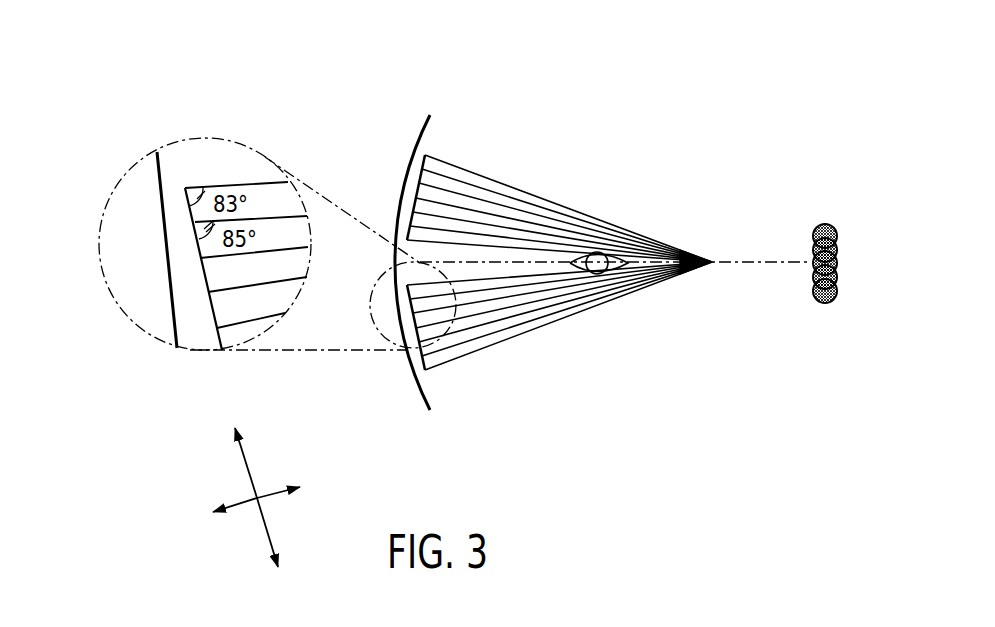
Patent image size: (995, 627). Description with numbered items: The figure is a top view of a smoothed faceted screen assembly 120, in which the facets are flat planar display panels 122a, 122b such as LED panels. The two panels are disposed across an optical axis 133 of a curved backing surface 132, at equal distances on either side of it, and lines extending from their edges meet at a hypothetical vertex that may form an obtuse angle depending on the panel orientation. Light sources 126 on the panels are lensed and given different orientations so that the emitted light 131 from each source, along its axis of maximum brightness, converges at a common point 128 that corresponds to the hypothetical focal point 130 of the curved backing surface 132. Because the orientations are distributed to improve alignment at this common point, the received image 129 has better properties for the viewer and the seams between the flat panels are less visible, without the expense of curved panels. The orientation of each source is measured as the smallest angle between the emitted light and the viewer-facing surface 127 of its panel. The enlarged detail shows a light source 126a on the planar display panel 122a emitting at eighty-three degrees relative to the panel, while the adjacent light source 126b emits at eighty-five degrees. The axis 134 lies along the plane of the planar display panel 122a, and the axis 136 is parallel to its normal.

The smoothed faceted screen assembly 120 is at (305, 70).
The planar display panel 122a is at (430, 368).
The planar display panel 122b is at (430, 161).
The light sources 126 is at (423, 183).
The light source 126a is at (183, 192).
The light source 126b is at (195, 232).
The surface 127 is at (218, 313).
The common point 128 is at (714, 264).
The received image 129 is at (825, 222).
The hypothetical focal point 130 is at (641, 262).
The emitted light 131 is at (568, 208).
The curved backing surface 132 is at (401, 186).
The optical axis 133 is at (782, 262).
The axis 134 is at (262, 526).
The axis 136 is at (270, 488).